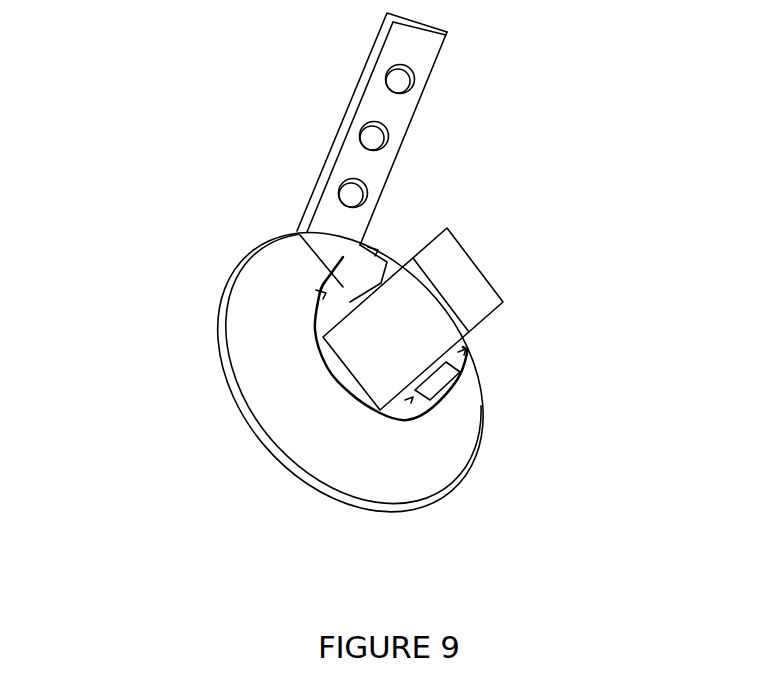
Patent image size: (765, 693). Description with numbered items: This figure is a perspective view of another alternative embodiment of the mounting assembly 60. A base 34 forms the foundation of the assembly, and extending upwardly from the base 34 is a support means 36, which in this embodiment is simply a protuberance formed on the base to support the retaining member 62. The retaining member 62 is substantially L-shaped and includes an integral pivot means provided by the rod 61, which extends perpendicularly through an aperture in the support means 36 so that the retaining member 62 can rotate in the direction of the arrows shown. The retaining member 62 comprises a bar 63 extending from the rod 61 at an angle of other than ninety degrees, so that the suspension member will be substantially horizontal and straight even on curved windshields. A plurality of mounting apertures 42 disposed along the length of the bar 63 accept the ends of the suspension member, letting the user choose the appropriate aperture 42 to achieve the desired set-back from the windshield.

The mounting assembly 60 is at (187, 157).
The base 34 is at (262, 352).
The retaining member 62 is at (443, 32).
The bar 63 is at (405, 113).
The mounting apertures 42 is at (345, 208).
The rod 61 is at (343, 258).
The support means 36 is at (483, 282).